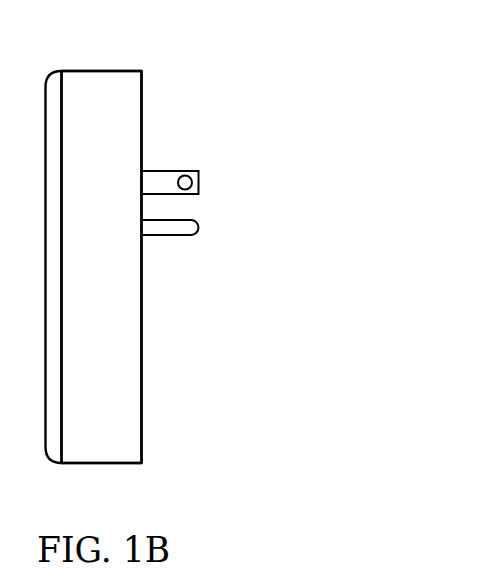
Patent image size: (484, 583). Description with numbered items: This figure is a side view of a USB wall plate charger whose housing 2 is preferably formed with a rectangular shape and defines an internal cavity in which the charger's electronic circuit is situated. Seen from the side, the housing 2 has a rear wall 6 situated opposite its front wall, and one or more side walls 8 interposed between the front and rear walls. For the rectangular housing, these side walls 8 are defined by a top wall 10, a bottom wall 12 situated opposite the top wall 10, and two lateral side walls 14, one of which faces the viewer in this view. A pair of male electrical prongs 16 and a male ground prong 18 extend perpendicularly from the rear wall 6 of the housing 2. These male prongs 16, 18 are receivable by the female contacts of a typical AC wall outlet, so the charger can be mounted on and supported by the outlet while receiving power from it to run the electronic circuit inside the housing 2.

The housing 2 is at (128, 407).
The rear wall 6 is at (142, 315).
The side walls 8 is at (93, 94).
The top wall 10 is at (122, 70).
The bottom wall 12 is at (130, 465).
The lateral side walls 14 is at (79, 448).
The male electrical prongs 16 is at (172, 171).
The male ground prong 18 is at (180, 237).